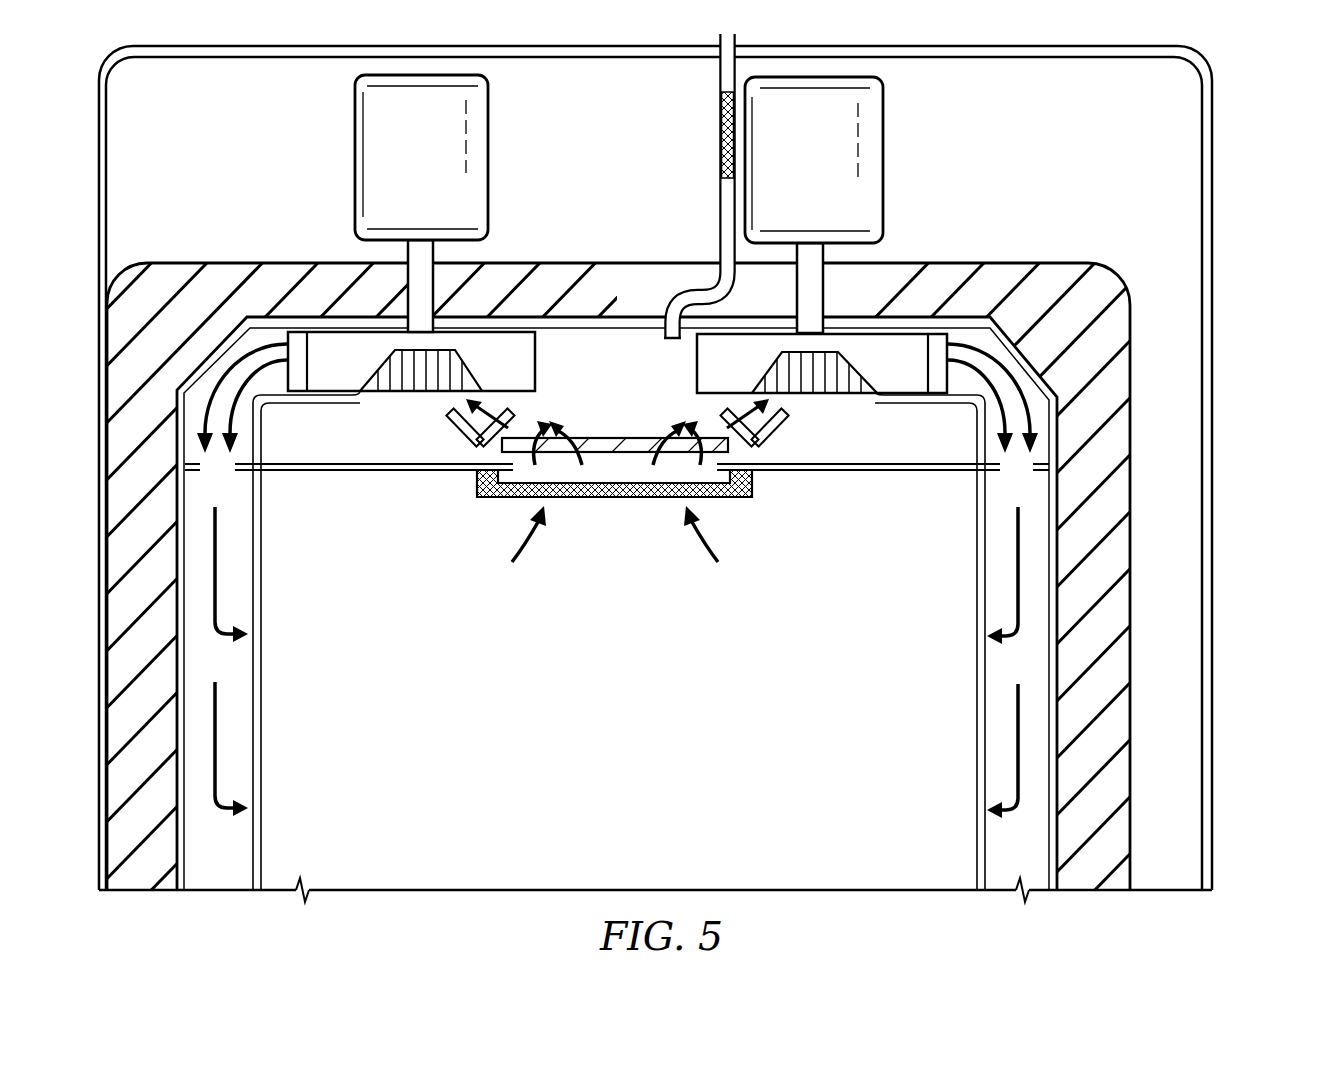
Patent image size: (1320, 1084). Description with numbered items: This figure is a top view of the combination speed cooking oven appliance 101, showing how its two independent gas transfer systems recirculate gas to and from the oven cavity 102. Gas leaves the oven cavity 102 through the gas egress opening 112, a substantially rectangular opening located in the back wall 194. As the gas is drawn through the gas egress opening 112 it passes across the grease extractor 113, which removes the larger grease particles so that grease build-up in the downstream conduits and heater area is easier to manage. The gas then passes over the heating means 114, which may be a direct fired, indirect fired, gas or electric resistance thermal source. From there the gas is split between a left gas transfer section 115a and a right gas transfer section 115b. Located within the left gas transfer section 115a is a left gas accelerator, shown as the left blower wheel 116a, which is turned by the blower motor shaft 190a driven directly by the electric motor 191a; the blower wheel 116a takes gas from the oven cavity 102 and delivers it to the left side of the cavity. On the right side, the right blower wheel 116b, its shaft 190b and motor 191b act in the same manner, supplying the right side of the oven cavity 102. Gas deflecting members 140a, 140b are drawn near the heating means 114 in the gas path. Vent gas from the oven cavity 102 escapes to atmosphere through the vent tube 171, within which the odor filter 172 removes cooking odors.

The appliance 101 is at (1220, 644).
The oven cavity 102 is at (650, 702).
The gas egress opening 112 is at (600, 500).
The grease extractor 113 is at (643, 500).
The heating means 114 is at (603, 435).
The left gas transfer section 115a is at (225, 365).
The right gas transfer section 115b is at (1008, 373).
The left blower wheel 116a is at (330, 378).
The right blower wheel 116b is at (905, 385).
The gas deflector 140a is at (450, 428).
The gas deflector 140b is at (785, 428).
The vent tube 171 is at (722, 212).
The odor filter 172 is at (721, 127).
The blower motor shaft 190a is at (405, 257).
The shaft 190b is at (823, 260).
The electric motor 191a is at (447, 167).
The motor 191b is at (839, 170).
The back wall 194 is at (858, 476).